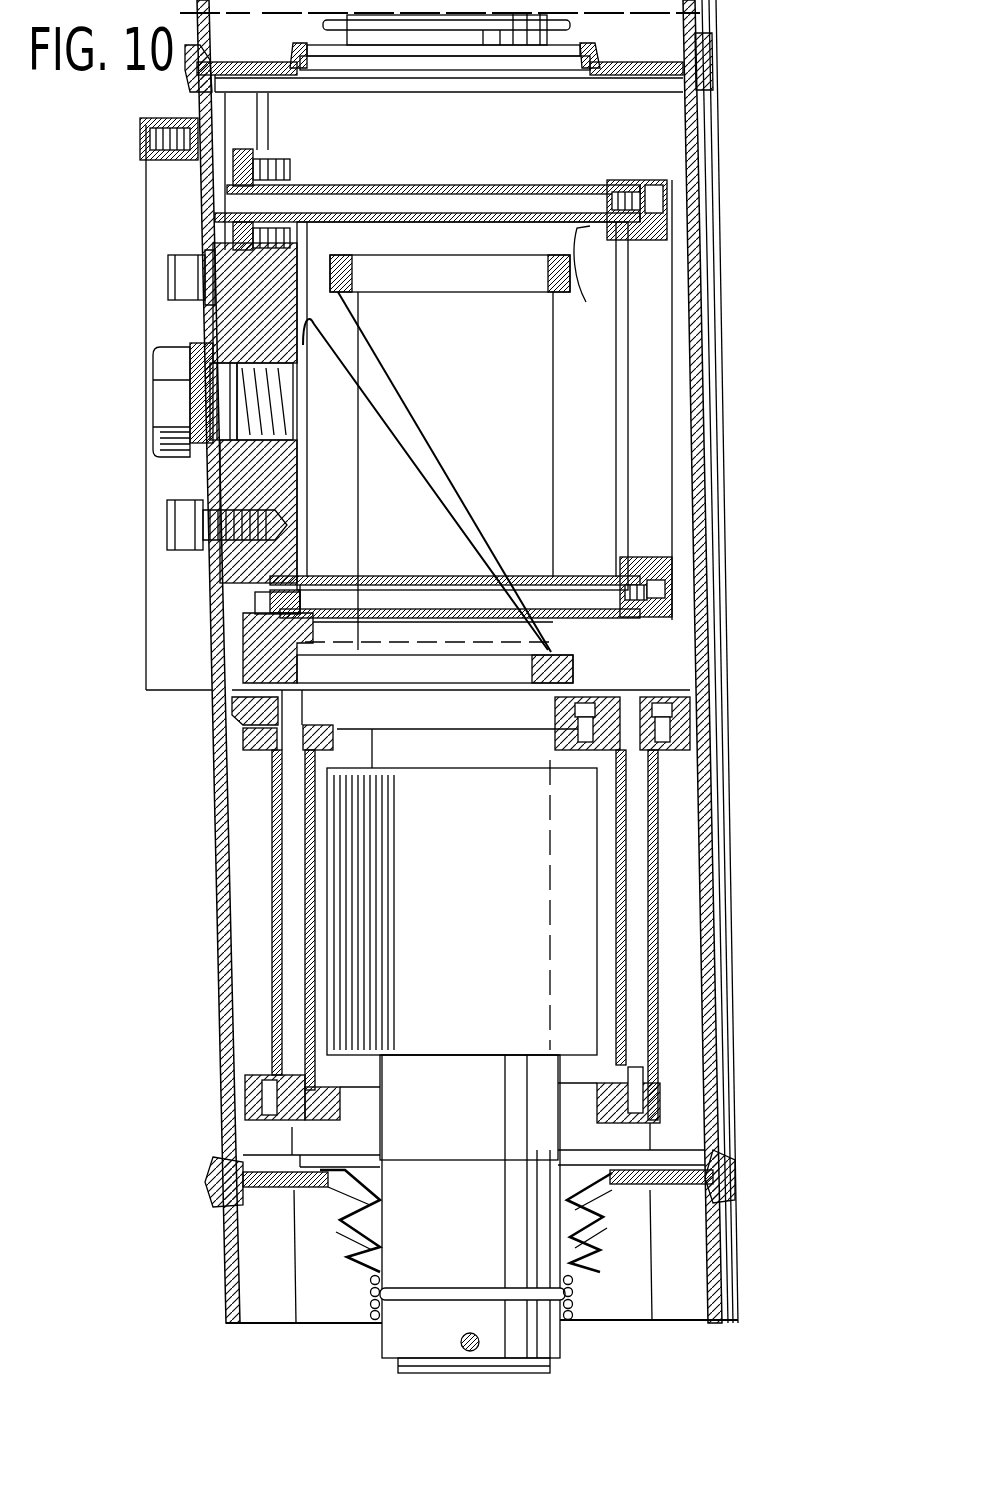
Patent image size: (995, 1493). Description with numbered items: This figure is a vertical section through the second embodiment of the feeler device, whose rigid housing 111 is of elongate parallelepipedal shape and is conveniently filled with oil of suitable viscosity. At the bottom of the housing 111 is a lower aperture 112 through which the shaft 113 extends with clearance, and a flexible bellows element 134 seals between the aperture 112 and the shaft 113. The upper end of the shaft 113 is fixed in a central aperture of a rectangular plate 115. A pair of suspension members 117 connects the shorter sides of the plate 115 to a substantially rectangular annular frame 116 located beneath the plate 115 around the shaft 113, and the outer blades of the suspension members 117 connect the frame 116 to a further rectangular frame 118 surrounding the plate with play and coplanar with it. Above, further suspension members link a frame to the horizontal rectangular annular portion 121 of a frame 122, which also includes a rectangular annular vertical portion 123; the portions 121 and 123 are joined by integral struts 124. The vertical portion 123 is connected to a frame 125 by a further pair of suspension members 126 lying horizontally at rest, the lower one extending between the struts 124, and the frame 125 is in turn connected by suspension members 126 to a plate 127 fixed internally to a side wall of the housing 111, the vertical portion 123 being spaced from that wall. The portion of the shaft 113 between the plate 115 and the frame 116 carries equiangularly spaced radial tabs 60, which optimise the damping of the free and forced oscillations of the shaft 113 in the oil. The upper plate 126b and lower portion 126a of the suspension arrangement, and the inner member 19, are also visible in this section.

The rigid housing 111 is at (220, 940).
The rectangular annular vertical portion 123 is at (258, 150).
The upper flange plate 126b is at (418, 185).
The suspension members 126 is at (502, 176).
The frame 125 is at (650, 226).
The plate 127 is at (240, 326).
The struts 124 is at (400, 412).
The inner member 19 is at (450, 294).
The flange portion 126a is at (591, 280).
The frame 122 is at (240, 668).
The horizontal rectangular annular portion 121 is at (478, 683).
The rectangular plate 115 is at (345, 712).
The rectangular frame 118 is at (230, 724).
The suspension members 117 is at (270, 858).
The radial tabs 60 is at (540, 986).
The rectangular annular frame 116 is at (348, 1112).
The lower aperture 112 is at (360, 1182).
The shaft 113 is at (392, 1298).
The flexible bellows element 134 is at (606, 1243).